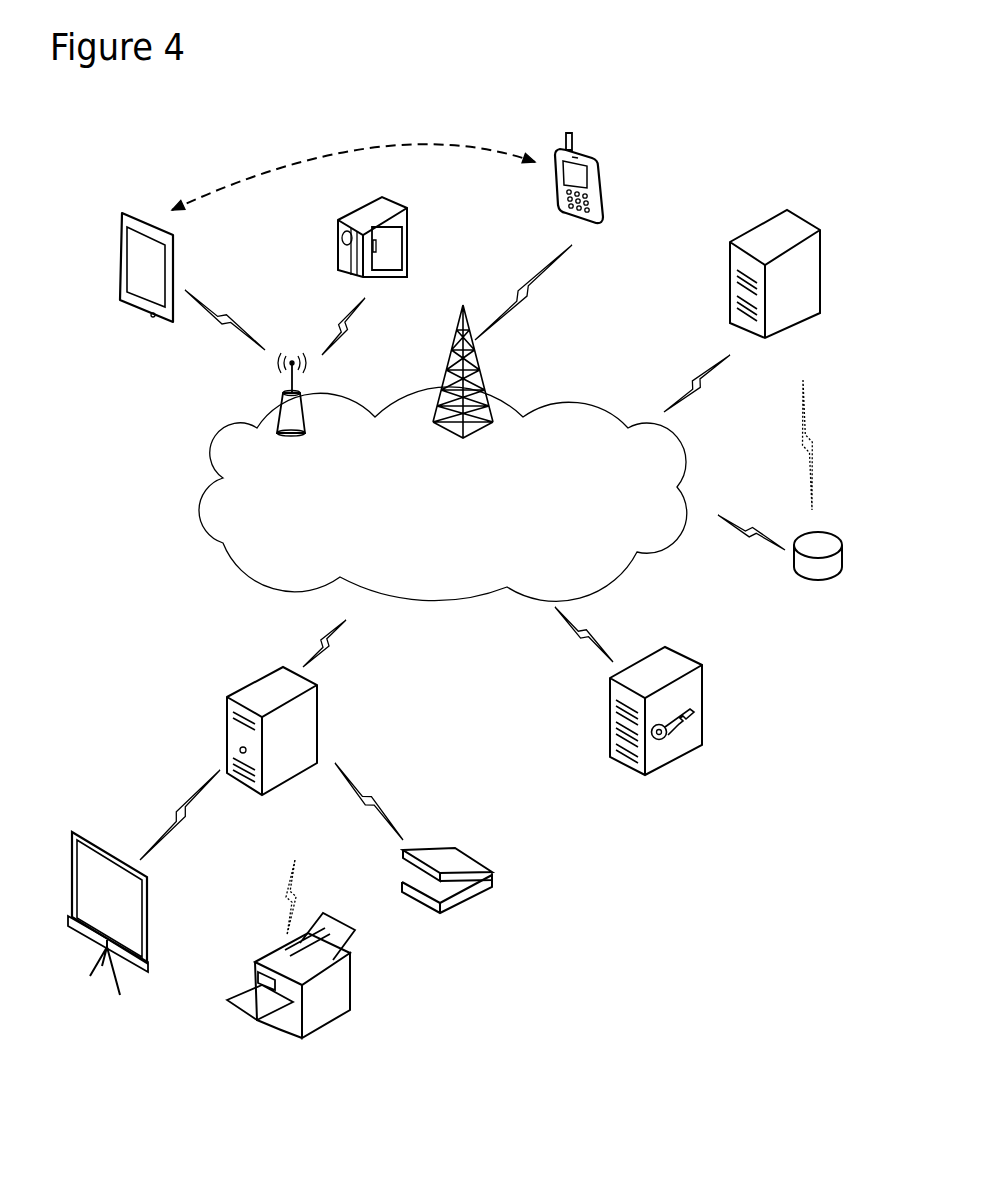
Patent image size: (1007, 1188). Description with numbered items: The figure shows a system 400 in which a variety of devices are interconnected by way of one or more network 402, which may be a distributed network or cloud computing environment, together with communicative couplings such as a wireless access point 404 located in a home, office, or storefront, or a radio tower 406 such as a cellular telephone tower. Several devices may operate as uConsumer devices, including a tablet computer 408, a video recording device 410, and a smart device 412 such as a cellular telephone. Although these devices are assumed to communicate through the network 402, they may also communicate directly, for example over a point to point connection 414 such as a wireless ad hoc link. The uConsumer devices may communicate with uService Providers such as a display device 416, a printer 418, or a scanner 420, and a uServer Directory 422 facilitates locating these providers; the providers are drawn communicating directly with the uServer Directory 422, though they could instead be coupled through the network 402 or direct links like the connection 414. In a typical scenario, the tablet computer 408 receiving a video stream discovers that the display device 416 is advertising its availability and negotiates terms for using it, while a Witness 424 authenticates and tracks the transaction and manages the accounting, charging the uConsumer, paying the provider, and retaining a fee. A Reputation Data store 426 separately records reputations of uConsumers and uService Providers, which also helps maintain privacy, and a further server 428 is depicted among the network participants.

The system 400 is at (717, 88).
The network 402 is at (198, 445).
The wireless access point 404 is at (282, 415).
The radio tower 406 is at (478, 378).
The tablet computer 408 is at (118, 220).
The video recording device 410 is at (406, 225).
The smart device 412 is at (596, 152).
The point to point connection 414 is at (383, 150).
The display device 416 is at (74, 857).
The printer 418 is at (284, 950).
The scanner 420 is at (483, 856).
The uServer Directory 422 is at (321, 730).
The Witness 424 is at (806, 226).
The Reputation Data store 426 is at (833, 533).
The specialized services server 428 is at (711, 690).